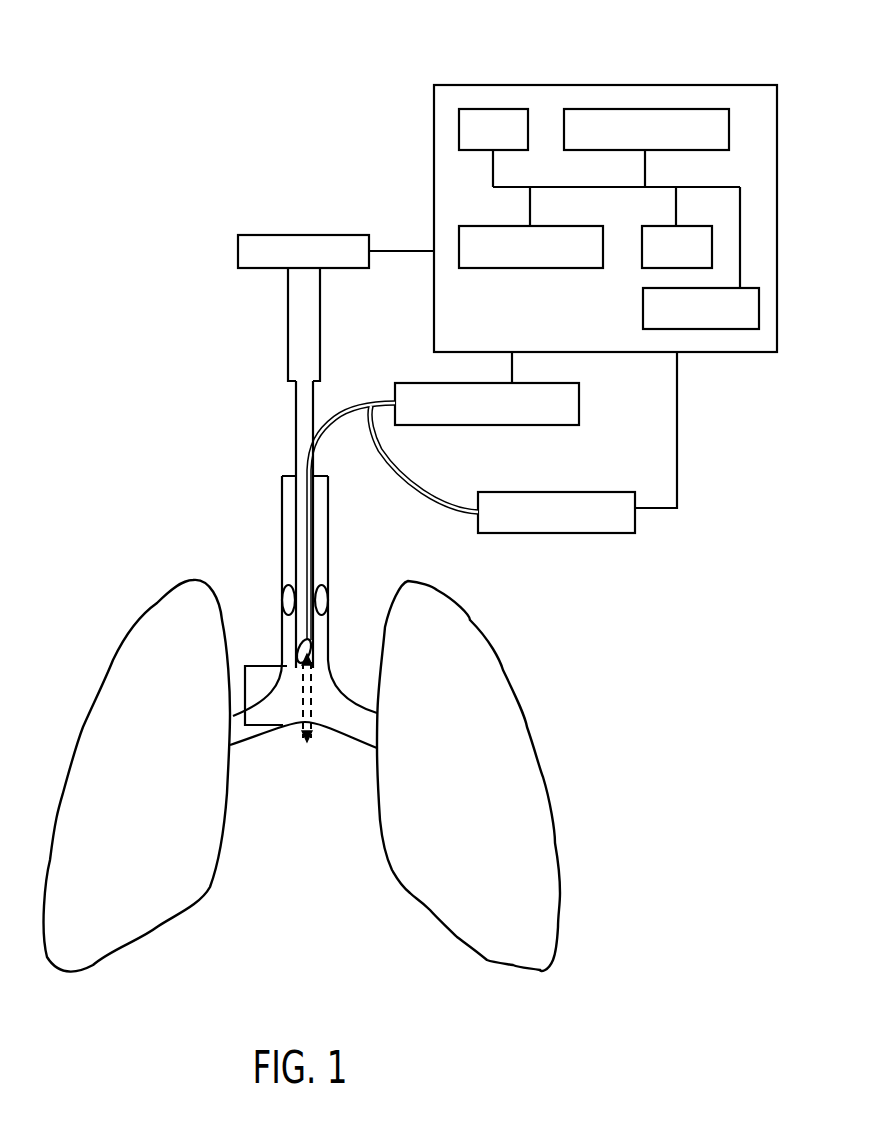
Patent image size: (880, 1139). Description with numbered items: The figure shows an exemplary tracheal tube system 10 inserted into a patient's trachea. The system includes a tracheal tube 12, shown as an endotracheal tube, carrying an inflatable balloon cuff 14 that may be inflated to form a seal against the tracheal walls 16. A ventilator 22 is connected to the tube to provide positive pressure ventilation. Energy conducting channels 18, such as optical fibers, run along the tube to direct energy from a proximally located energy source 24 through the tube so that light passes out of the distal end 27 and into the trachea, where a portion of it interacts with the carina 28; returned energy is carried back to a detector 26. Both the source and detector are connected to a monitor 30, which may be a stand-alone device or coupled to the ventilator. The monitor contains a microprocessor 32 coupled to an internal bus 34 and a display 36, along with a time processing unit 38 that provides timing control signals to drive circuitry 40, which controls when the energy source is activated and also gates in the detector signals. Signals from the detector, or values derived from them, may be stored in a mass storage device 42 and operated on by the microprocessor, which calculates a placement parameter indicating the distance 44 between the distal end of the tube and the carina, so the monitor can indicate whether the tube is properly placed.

The tracheal tube system 10 is at (122, 73).
The tracheal tube 12 is at (308, 470).
The inflatable balloon cuff 14 is at (325, 588).
The tracheal walls 16 is at (282, 505).
The energy conducting channels 18 is at (354, 403).
The ventilator 22 is at (302, 233).
The energy source 24 is at (556, 535).
The detector 26 is at (492, 427).
The distal end 27 is at (314, 650).
The carina 28 is at (303, 754).
The monitor 30 is at (605, 85).
The microprocessor 32 is at (530, 140).
The internal bus 34 is at (491, 169).
The display 36 is at (642, 308).
The time processing unit 38 is at (670, 225).
The drive circuitry 40 is at (532, 270).
The mass storage device 42 is at (623, 152).
The distance 44 is at (237, 678).